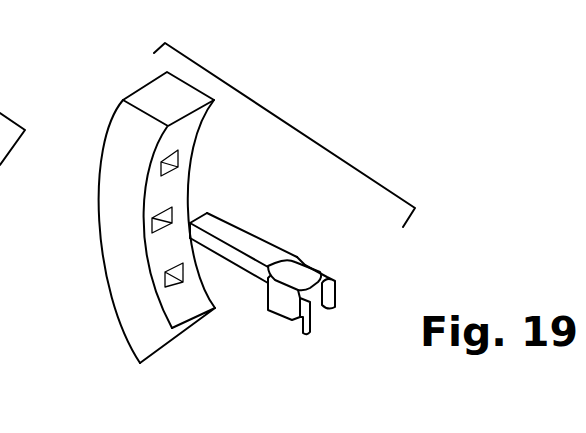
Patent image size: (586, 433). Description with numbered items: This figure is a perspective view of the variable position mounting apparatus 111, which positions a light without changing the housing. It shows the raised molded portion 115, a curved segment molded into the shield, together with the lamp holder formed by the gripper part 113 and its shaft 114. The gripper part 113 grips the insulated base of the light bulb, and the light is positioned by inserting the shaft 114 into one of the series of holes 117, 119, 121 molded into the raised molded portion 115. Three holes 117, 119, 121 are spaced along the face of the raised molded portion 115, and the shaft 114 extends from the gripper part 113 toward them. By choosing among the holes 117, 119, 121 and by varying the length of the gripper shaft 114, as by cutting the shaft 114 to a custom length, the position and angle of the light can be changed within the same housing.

The mounting plate 111 is at (327, 132).
The gripper part 113 is at (312, 262).
The shaft 114 is at (262, 240).
The raised molded portion 115 is at (110, 237).
The hole 117 is at (181, 169).
The hole 119 is at (172, 213).
The hole 121 is at (182, 279).